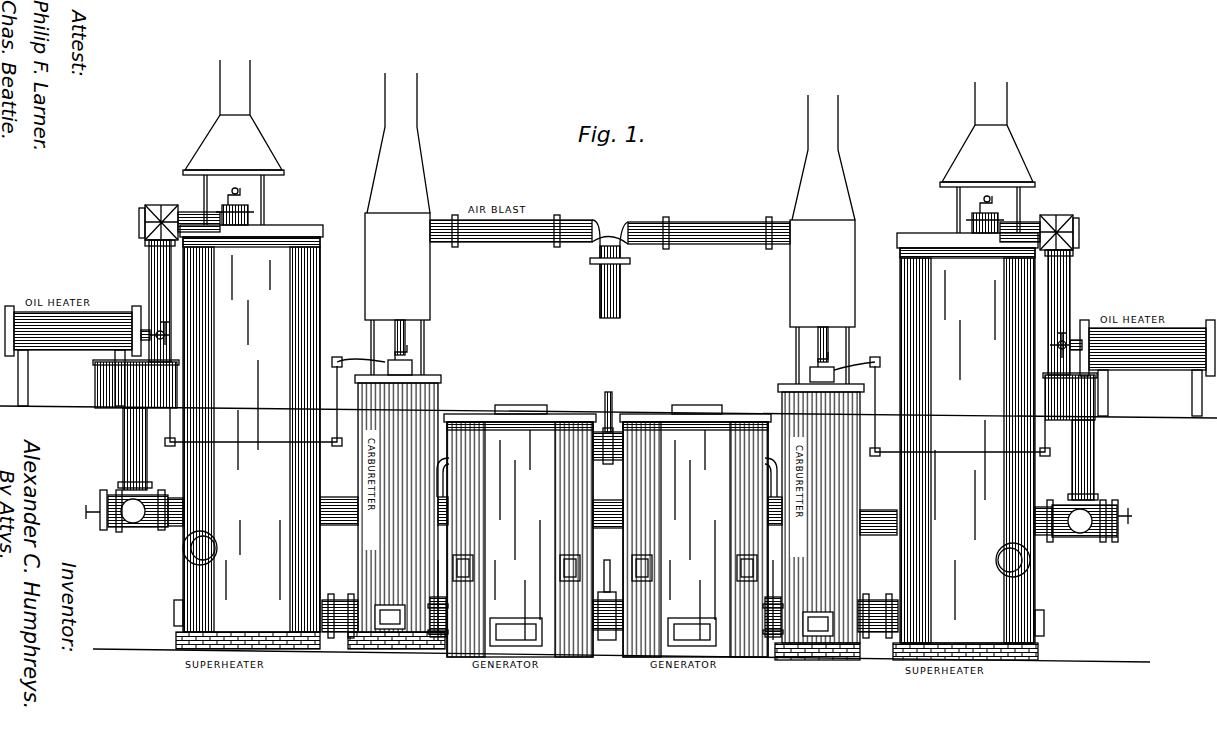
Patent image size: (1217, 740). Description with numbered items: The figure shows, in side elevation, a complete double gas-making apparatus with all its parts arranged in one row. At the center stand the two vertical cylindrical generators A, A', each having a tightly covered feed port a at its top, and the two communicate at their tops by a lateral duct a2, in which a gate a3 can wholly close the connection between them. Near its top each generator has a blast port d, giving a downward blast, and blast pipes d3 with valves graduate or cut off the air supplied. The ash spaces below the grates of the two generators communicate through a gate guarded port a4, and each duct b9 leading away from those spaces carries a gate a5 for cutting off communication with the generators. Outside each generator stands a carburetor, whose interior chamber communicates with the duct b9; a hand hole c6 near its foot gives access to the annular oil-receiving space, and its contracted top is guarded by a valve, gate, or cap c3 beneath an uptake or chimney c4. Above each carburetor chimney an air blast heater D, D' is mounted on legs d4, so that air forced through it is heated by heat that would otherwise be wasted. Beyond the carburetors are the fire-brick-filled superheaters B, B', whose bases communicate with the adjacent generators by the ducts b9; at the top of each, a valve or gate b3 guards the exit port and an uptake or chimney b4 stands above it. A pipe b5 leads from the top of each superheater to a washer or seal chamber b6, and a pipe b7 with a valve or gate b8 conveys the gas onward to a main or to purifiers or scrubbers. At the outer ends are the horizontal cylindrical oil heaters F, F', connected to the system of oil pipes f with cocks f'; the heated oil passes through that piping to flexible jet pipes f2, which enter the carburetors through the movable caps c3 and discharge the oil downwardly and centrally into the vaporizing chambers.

The generator A is at (520, 535).
The generator A' is at (695, 535).
The superheater B is at (248, 437).
The superheater B' is at (968, 446).
The air blast heater D is at (397, 266).
The air blast heater D' is at (822, 273).
The oil heater F is at (73, 356).
The oil heater F' is at (1147, 368).
The feed port a is at (608, 402).
The lateral duct a2 is at (596, 463).
The gate a3 is at (452, 468).
The gate guarded port a4 is at (608, 607).
The gate a5 is at (441, 568).
The valve or gate b3 is at (610, 206).
The uptake or chimney b4 is at (609, 123).
The pipe b5 is at (601, 283).
The washer or seal chamber b6 is at (585, 390).
The pipe b7 is at (610, 454).
The valve or gate b8 is at (608, 516).
The duct b9 is at (768, 640).
The valve, gate, or cap c3 is at (611, 363).
The uptake or chimney c4 is at (611, 146).
The hand hole c6 is at (382, 629).
The blast port d is at (606, 341).
The blast pipe d3 is at (610, 263).
The legs d4 is at (796, 352).
The oil pipe f is at (603, 411).
The cock f' is at (620, 326).
The jet pipe f2 is at (606, 356).